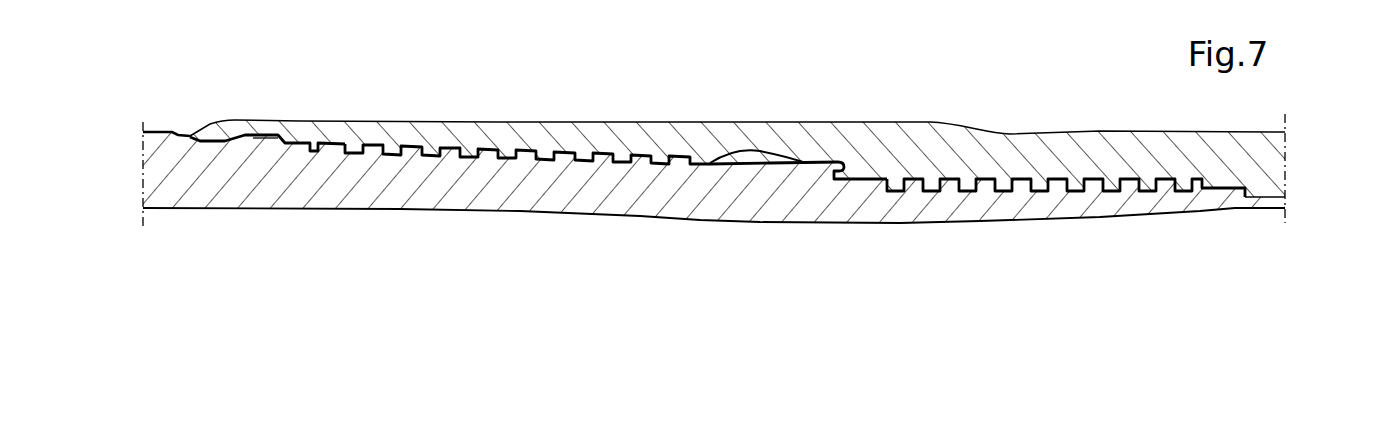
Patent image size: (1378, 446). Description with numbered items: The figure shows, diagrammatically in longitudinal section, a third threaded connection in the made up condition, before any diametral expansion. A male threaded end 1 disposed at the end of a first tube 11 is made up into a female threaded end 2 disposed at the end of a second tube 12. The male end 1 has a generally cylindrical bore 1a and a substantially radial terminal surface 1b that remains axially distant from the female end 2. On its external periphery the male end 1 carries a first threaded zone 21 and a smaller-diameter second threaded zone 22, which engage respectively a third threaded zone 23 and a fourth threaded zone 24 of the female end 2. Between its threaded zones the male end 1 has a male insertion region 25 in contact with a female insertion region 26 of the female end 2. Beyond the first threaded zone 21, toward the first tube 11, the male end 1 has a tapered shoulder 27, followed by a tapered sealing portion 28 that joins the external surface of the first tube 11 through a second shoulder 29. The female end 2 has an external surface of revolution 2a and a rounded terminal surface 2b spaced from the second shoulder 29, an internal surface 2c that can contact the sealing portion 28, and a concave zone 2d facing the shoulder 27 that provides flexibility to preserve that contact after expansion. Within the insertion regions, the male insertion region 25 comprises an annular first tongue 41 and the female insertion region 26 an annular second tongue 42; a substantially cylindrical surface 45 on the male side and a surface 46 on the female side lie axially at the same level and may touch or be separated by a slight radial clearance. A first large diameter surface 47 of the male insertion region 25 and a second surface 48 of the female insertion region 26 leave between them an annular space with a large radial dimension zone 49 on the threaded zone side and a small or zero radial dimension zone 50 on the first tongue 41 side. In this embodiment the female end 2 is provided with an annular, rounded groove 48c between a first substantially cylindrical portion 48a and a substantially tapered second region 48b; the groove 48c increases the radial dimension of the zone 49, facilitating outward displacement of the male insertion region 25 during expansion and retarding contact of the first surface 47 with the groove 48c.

The male threaded end 1 is at (462, 200).
The bore 1a is at (348, 210).
The terminal surface 1b is at (1255, 210).
The female threaded end 2 is at (958, 137).
The external surface of revolution 2a is at (463, 121).
The terminal surface 2b is at (190, 134).
The internal surface 2c is at (202, 142).
The concave zone 2d is at (264, 147).
The first tube 11 is at (150, 131).
The second tube 12 is at (1273, 155).
The first threaded zone 21 is at (565, 162).
The second threaded zone 22 is at (1058, 193).
The third threaded zone 23 is at (543, 150).
The fourth threaded zone 24 is at (1122, 187).
The male insertion region 25 is at (770, 210).
The female insertion region 26 is at (765, 150).
The shoulder 27 is at (258, 134).
The tapered sealing portion 28 is at (216, 134).
The second shoulder 29 is at (185, 132).
The first tongue 41 is at (836, 176).
The second tongue 42 is at (842, 165).
The substantially cylindrical surface 45 is at (877, 178).
The surface 46 is at (856, 191).
The first large diameter surface 47 is at (775, 158).
The second surface 48 is at (722, 162).
The first substantially cylindrical portion 48a is at (700, 164).
The second region 48b is at (808, 165).
The groove 48c is at (745, 152).
The large radial dimension zone 49 is at (740, 157).
The small radial dimension zone 50 is at (800, 160).